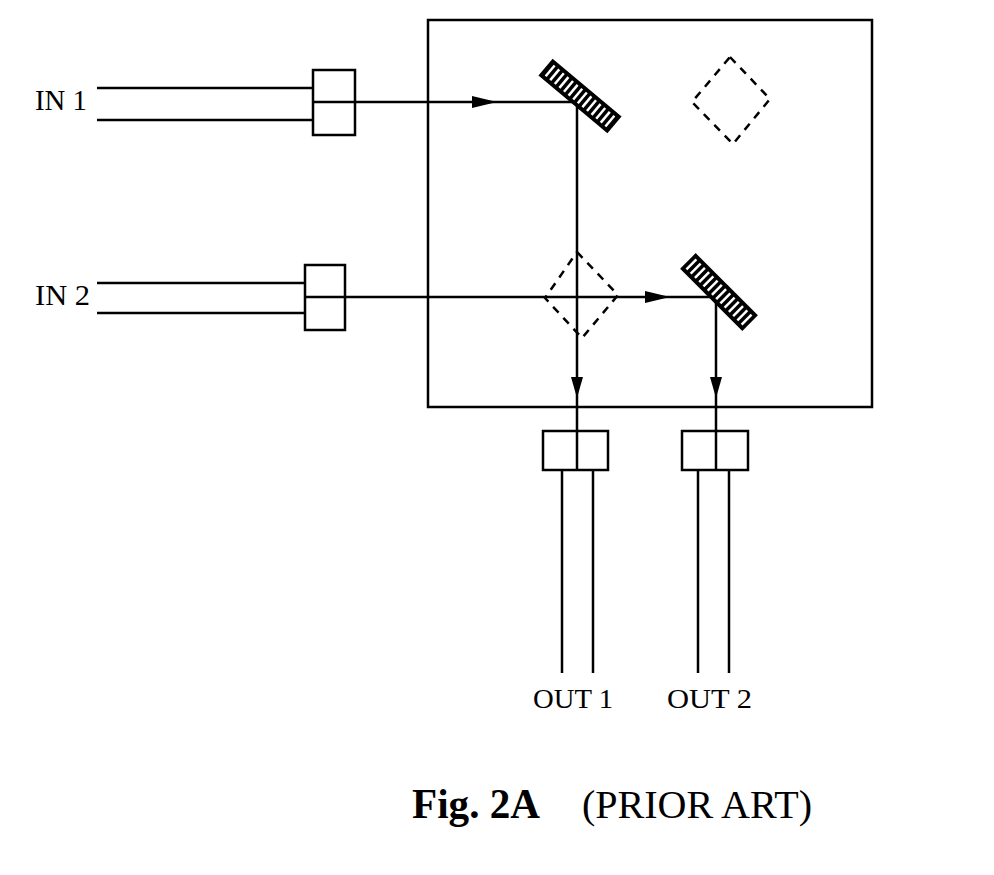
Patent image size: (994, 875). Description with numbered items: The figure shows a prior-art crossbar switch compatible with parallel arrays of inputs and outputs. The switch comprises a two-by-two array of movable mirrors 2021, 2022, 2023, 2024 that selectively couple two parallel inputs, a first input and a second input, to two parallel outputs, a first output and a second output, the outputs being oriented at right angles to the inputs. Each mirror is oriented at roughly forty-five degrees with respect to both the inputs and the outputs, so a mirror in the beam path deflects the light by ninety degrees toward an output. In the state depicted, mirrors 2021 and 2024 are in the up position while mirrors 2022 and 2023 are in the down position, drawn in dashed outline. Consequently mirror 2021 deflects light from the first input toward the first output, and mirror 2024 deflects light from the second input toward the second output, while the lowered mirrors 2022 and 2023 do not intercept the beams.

The movable mirror 2021 is at (589, 87).
The movable mirror 2022 is at (757, 87).
The movable mirror 2023 is at (600, 276).
The movable mirror 2024 is at (725, 276).